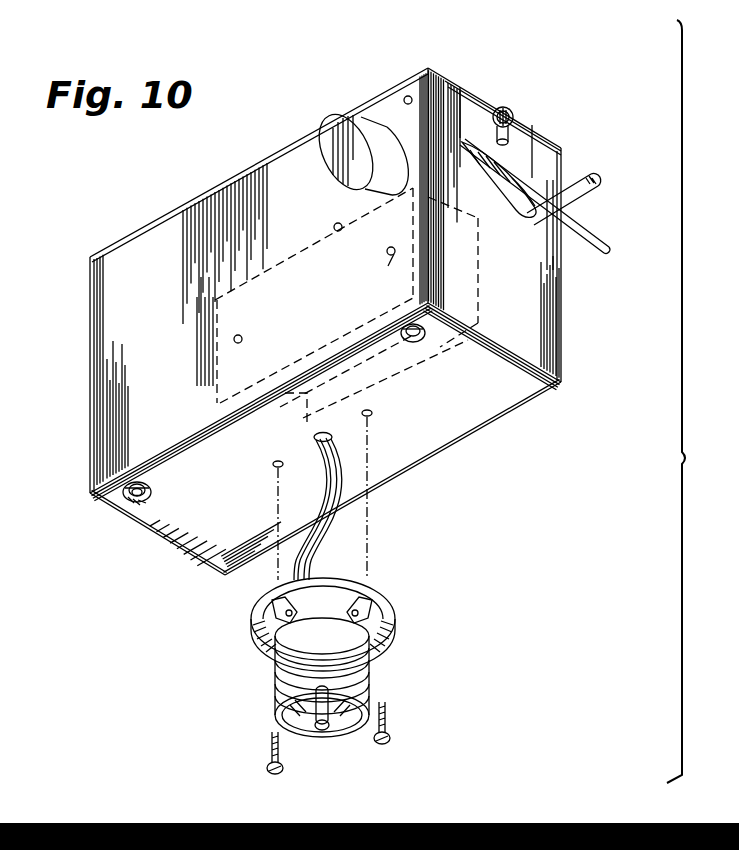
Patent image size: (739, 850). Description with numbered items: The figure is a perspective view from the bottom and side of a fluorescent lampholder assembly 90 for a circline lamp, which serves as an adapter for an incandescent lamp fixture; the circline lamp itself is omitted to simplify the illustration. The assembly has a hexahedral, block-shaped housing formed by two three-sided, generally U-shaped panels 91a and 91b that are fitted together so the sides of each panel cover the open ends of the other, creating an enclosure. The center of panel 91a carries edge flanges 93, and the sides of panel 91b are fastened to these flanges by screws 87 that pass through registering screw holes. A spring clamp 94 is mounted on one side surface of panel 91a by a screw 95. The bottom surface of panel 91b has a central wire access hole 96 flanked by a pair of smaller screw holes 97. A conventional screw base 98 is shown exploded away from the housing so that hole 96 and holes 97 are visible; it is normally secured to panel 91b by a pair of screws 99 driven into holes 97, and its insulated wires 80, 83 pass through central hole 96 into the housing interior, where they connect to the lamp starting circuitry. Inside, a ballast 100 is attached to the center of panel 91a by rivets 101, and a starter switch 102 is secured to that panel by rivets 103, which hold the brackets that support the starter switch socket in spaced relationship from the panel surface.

The wire 80 is at (275, 572).
The insulated wire 83 is at (322, 528).
The screw 87 is at (421, 344).
The lampholder assembly 90 is at (503, 82).
The panel 91a is at (92, 402).
The panel 91b is at (490, 422).
The edge flange 93 is at (230, 443).
The spring clamp 94 is at (603, 248).
The screw 95 is at (512, 113).
The central wire access hole 96 is at (318, 444).
The screw hole 97 is at (373, 413).
The screw base 98 is at (283, 672).
The screw 99 is at (269, 740).
The ballast 100 is at (283, 245).
The rivet 101 is at (243, 337).
The starter switch 102 is at (326, 176).
The rivet 103 is at (409, 96).